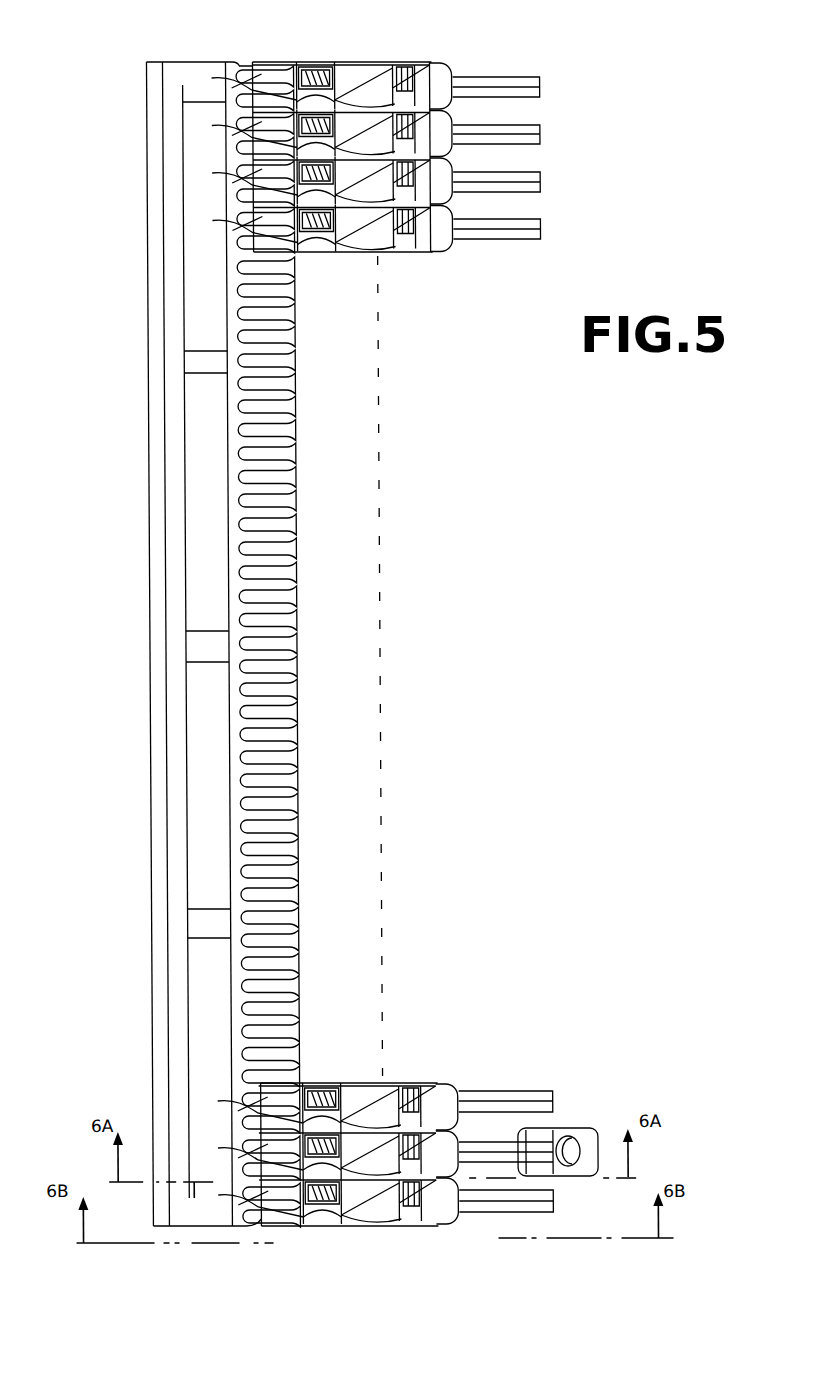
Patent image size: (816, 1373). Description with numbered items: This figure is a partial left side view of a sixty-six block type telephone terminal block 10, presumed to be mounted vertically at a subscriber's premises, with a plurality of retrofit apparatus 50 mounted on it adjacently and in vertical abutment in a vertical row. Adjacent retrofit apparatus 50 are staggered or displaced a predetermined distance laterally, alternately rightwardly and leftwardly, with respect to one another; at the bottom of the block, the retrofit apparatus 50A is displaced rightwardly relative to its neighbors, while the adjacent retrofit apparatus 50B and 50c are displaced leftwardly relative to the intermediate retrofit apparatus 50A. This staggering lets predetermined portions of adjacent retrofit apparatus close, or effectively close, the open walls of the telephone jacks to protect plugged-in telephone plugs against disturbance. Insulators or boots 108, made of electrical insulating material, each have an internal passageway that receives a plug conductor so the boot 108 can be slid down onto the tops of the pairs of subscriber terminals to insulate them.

The telephone terminal block 10 is at (140, 530).
The retrofit apparatus 50 is at (462, 63).
The insulator or boot 108 is at (450, 117).
The retrofit apparatus 50c is at (449, 1065).
The retrofit apparatus 50A is at (480, 1136).
The retrofit apparatus 50B is at (460, 1236).